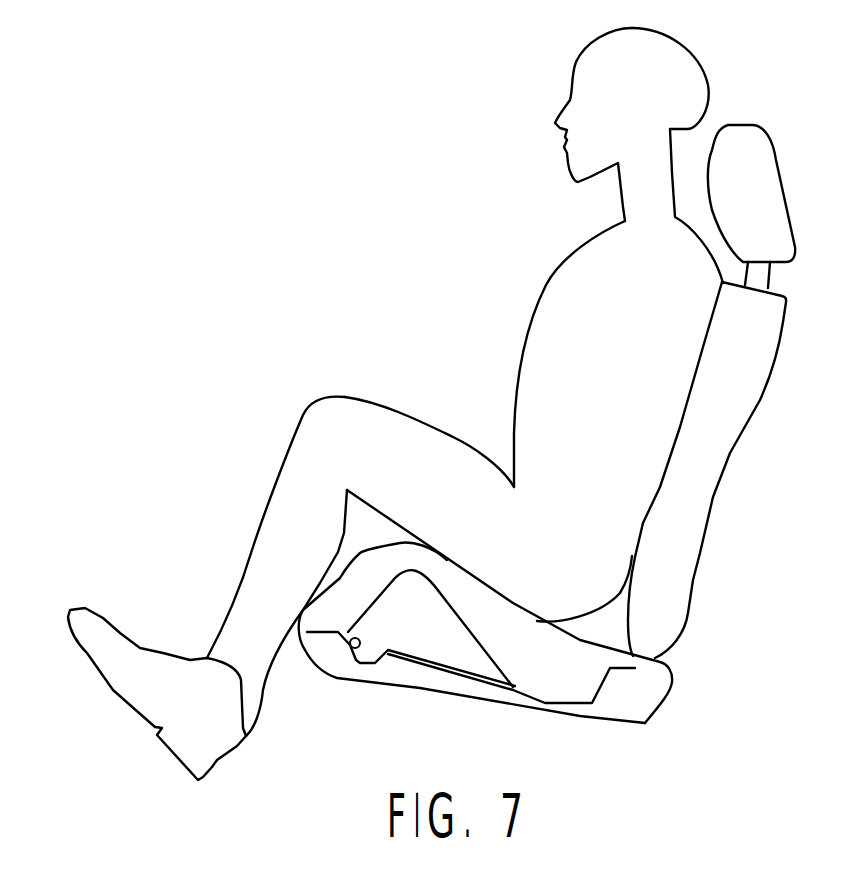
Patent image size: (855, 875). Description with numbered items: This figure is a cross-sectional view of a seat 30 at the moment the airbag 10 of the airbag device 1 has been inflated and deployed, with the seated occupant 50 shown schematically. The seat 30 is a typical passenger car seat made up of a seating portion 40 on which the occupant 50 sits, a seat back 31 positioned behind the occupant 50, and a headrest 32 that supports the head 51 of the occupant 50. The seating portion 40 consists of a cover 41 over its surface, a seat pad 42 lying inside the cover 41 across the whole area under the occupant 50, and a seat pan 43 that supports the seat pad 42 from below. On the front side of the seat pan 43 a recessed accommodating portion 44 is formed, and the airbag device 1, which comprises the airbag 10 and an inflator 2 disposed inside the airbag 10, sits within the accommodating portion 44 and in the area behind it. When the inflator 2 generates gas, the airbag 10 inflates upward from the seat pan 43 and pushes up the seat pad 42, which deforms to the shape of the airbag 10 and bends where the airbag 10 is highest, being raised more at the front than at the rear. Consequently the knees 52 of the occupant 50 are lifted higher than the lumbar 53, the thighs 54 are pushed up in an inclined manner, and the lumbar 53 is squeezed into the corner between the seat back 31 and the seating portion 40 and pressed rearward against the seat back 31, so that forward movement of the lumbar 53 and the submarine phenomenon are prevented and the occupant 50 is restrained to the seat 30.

The airbag device 1 is at (408, 667).
The inflator 2 is at (362, 663).
The airbag 10 is at (457, 562).
The seat 30 is at (720, 364).
The seat back 31 is at (710, 457).
The headrest 32 is at (768, 182).
The seating portion 40 is at (522, 636).
The cover 41 is at (362, 541).
The seat pad 42 is at (513, 637).
The seat pan 43 is at (525, 704).
The accommodating portion 44 is at (348, 655).
The occupant 50 is at (422, 403).
The head 51 is at (682, 60).
The knees 52 is at (340, 432).
The lumbar 53 is at (580, 572).
The thighs 54 is at (430, 453).